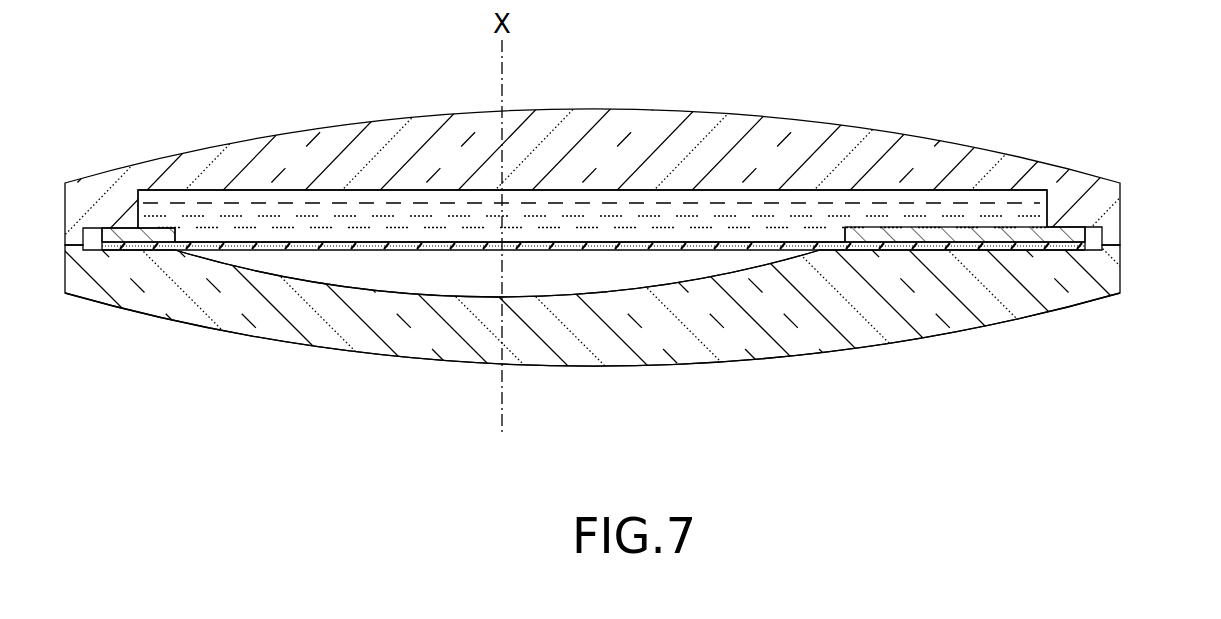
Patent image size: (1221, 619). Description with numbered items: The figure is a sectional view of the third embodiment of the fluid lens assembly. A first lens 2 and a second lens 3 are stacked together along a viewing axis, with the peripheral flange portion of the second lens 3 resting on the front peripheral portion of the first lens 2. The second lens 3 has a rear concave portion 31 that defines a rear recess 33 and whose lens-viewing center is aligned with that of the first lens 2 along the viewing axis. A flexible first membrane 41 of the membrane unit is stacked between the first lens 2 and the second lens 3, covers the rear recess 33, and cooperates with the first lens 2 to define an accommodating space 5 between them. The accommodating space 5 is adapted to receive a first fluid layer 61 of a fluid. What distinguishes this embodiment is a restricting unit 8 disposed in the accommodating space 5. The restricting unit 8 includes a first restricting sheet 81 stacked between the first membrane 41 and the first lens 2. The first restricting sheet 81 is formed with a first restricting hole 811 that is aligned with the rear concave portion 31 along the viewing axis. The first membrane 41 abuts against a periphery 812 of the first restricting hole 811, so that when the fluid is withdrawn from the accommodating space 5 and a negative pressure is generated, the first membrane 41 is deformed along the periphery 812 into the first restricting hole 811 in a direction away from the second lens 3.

The first lens 2 is at (1003, 153).
The second lens 3 is at (998, 325).
The rear concave portion 31 is at (447, 334).
The rear recess 33 is at (584, 278).
The first membrane 41 is at (234, 252).
The accommodating space 5 is at (553, 190).
The first fluid layer 61 is at (662, 203).
The restricting unit 8 is at (155, 228).
The first restricting sheet 81 is at (1066, 228).
The first restricting hole 811 is at (780, 240).
The periphery 812 is at (838, 241).